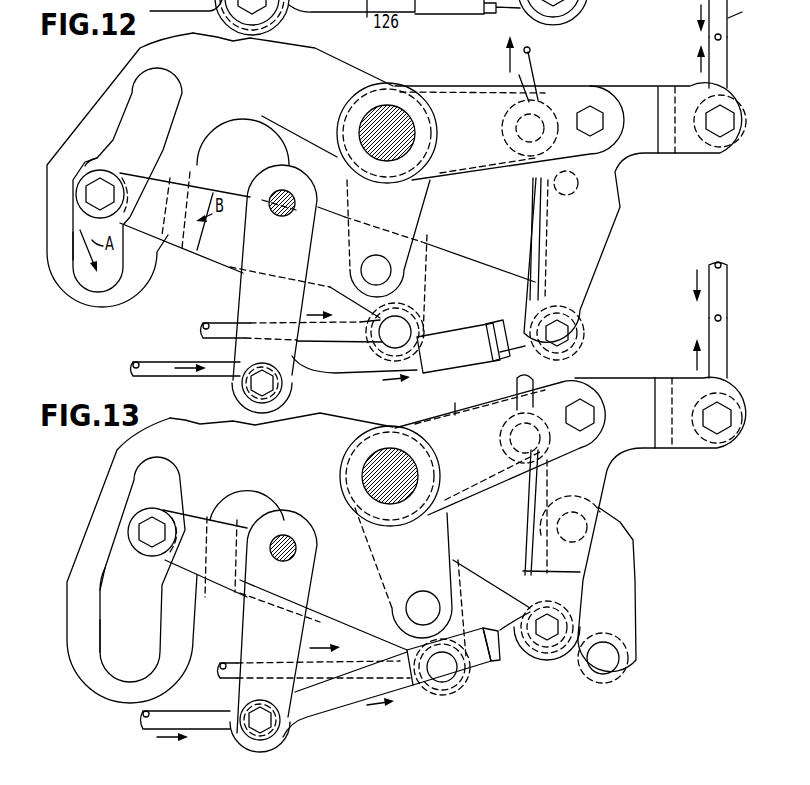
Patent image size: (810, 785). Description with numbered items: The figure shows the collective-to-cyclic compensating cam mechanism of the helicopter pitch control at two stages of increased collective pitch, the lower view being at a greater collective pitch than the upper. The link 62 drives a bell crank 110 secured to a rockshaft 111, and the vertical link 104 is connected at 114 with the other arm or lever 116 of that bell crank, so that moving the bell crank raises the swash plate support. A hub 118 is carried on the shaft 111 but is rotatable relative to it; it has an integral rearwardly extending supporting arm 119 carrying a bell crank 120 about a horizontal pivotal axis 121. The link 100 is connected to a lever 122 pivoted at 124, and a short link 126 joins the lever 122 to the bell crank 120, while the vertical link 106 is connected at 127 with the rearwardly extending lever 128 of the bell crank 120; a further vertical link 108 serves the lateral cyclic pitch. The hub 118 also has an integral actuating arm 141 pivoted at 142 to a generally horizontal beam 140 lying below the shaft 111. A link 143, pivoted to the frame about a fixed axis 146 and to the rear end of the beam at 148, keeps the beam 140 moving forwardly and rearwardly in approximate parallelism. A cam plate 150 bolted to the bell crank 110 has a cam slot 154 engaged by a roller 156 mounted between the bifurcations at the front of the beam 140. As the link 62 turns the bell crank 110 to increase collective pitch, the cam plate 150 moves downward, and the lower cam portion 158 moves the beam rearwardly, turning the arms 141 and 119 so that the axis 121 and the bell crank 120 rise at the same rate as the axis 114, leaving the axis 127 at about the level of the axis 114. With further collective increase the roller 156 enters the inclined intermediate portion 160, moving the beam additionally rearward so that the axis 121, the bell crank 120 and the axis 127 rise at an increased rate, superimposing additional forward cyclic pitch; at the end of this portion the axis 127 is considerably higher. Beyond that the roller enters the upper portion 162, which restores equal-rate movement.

In FIG. 12, the link 62 is at (208, 322).
In FIG. 13, the link 62 is at (230, 663).
In FIG. 12, the link 100 is at (163, 370).
In FIG. 13, the link 100 is at (194, 715).
In FIG. 12, the vertical link 104 is at (531, 72).
In FIG. 13, the vertical link 104 is at (517, 392).
In FIG. 12, the vertical link 106 is at (728, 72).
In FIG. 13, the vertical link 106 is at (728, 362).
In FIG. 12, the vertical link 108 is at (712, 18).
In FIG. 13, the vertical link 108 is at (728, 302).
In FIG. 12, the bell crank 110 is at (428, 228).
In FIG. 13, the bell crank 110 is at (455, 550).
In FIG. 12, the rockshaft 111 is at (395, 118).
In FIG. 13, the rockshaft 111 is at (388, 462).
In FIG. 12, the connection of link 104 with lever 116 114 is at (527, 152).
In FIG. 13, the connection of link 104 with lever 116 114 is at (523, 440).
In FIG. 12, the arm or lever of bell crank 110 116 is at (488, 90).
In FIG. 13, the arm or lever of bell crank 110 116 is at (457, 398).
In FIG. 12, the hub 118 is at (384, 85).
In FIG. 13, the hub 118 is at (346, 457).
In FIG. 12, the supporting arm 119 is at (450, 86).
In FIG. 13, the supporting arm 119 is at (422, 422).
In FIG. 12, the bell crank 120 is at (612, 175).
In FIG. 13, the bell crank 120 is at (606, 458).
In FIG. 12, the pivotal axis 121 is at (592, 110).
In FIG. 13, the pivotal axis 121 is at (583, 400).
In FIG. 12, the lever 122 is at (248, 303).
In FIG. 13, the lever 122 is at (253, 627).
In FIG. 12, the pivot of lever 122 124 is at (278, 192).
In FIG. 13, the pivot of lever 122 124 is at (284, 538).
In FIG. 12, the link 126 is at (343, 375).
In FIG. 13, the link 126 is at (350, 697).
In FIG. 12, the connection of link 106 with lever 128 127 is at (728, 118).
In FIG. 13, the connection of link 106 with lever 128 127 is at (730, 415).
In FIG. 12, the arm or lever of bell crank 120 128 is at (662, 86).
In FIG. 13, the arm or lever of bell crank 120 128 is at (663, 380).
In FIG. 12, the link or beam 140 is at (215, 190).
In FIG. 13, the link or beam 140 is at (244, 530).
In FIG. 12, the actuating arm 141 is at (416, 205).
In FIG. 13, the actuating arm 141 is at (448, 530).
In FIG. 12, the pivotal connection 142 is at (400, 277).
In FIG. 13, the pivotal connection 142 is at (406, 610).
In FIG. 12, the link 143 is at (533, 228).
In FIG. 13, the link 143 is at (636, 562).
In FIG. 12, the fixed axis 146 is at (566, 196).
In FIG. 13, the fixed axis 146 is at (580, 512).
In FIG. 12, the pivot of link 143 to beam 148 is at (588, 298).
In FIG. 13, the pivot of link 143 to beam 148 is at (613, 648).
In FIG. 12, the cam plate 150 is at (320, 60).
In FIG. 13, the cam plate 150 is at (190, 432).
In FIG. 12, the cam slot 154 is at (122, 135).
In FIG. 13, the cam slot 154 is at (105, 602).
In FIG. 12, the roller 156 is at (128, 180).
In FIG. 13, the roller 156 is at (178, 510).
In FIG. 12, the lower cam portion 158 is at (73, 240).
In FIG. 13, the lower cam portion 158 is at (110, 643).
In FIG. 12, the inclined intermediate cam portion 160 is at (90, 158).
In FIG. 13, the inclined intermediate cam portion 160 is at (103, 566).
In FIG. 12, the upper cam portion 162 is at (133, 82).
In FIG. 13, the upper cam portion 162 is at (134, 483).